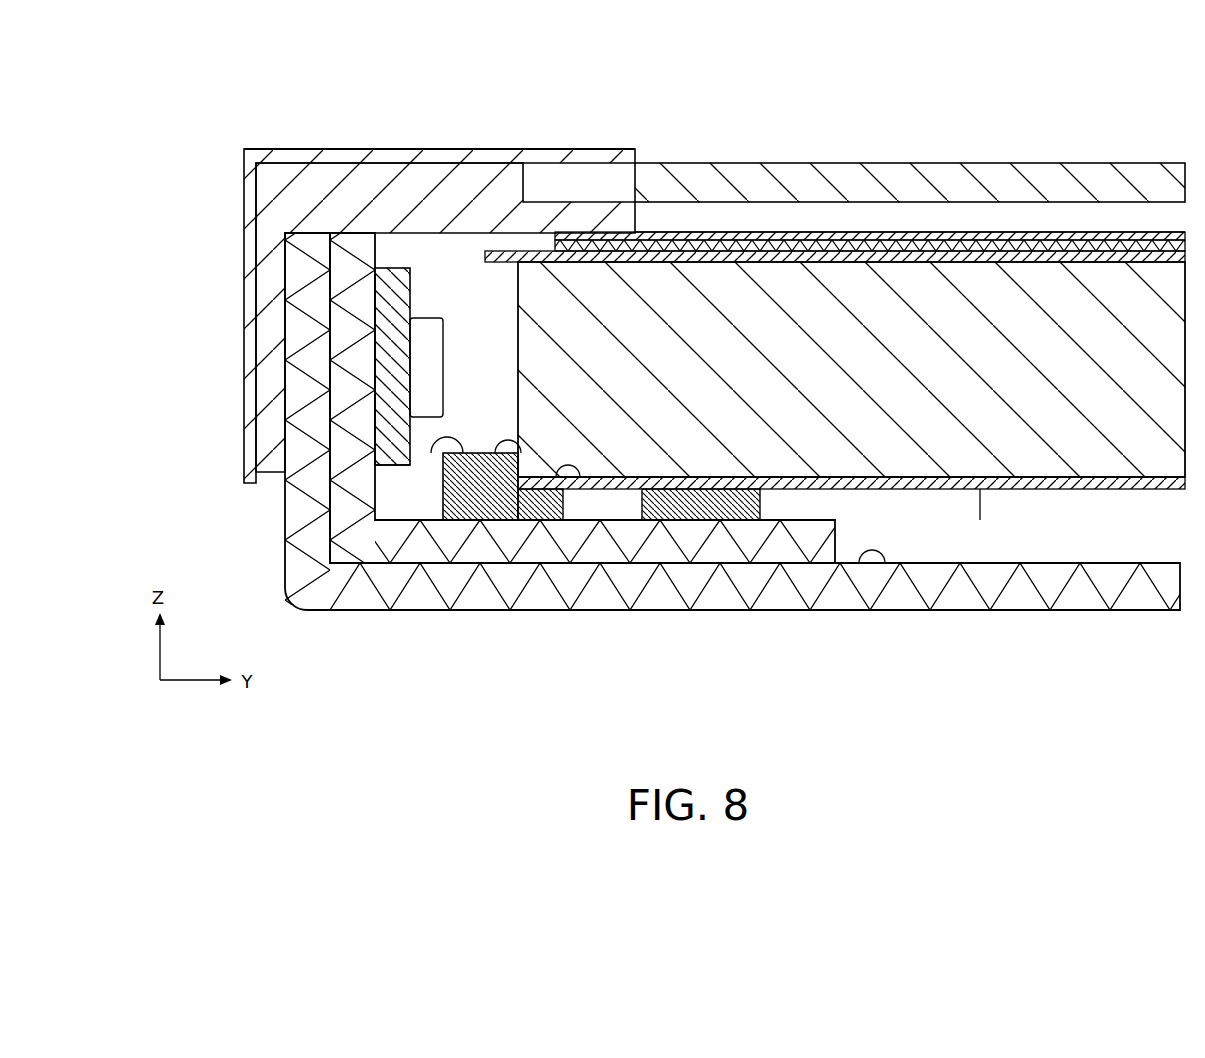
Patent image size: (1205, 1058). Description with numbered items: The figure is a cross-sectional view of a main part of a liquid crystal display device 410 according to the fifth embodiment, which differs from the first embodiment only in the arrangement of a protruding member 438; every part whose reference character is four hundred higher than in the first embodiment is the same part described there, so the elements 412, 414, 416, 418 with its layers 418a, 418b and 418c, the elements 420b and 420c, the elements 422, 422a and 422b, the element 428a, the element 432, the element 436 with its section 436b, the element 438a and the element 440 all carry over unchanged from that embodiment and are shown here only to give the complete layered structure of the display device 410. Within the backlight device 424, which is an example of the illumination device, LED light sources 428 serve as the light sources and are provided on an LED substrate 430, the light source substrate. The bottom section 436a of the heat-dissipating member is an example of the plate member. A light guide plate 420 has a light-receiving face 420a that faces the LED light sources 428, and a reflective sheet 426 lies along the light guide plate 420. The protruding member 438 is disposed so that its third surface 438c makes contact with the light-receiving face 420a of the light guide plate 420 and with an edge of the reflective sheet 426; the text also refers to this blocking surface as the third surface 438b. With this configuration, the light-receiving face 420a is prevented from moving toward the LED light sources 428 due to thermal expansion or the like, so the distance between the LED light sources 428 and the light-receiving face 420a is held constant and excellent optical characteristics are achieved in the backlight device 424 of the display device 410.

The liquid crystal display device 410 is at (775, 116).
The outer frame 412 is at (280, 158).
The frame member 414 is at (357, 180).
The cover panel 416 is at (686, 185).
The optical laminate 418 is at (835, 167).
The first optical layer 418a is at (929, 236).
The second optical layer 418b is at (995, 246).
The third optical layer 418c is at (925, 113).
The light guide plate 420 is at (821, 382).
The light-receiving face 420a is at (518, 297).
The display surface 420b is at (842, 231).
The rear surface layer of display panel 420c is at (1098, 490).
The rear housing 422 is at (670, 465).
The protrusion of rear housing 422a is at (858, 570).
The side wall of rear housing 422b is at (310, 379).
The backlight device 424 is at (778, 640).
The reflective sheet 426 is at (980, 497).
The LED light sources 428 is at (400, 320).
The wiring of light source substrate 428a is at (427, 425).
The LED substrate 430 is at (430, 345).
The light source unit 432 is at (279, 366).
The reflective sheet 436 is at (499, 448).
The bottom section 436a is at (650, 545).
The side portion of reflective sheet 436b is at (350, 398).
The protruding member 438 is at (492, 548).
The extension of light guide member 438a is at (580, 478).
The third surface 438b is at (427, 457).
The third surface 438c is at (497, 462).
The spacer 440 is at (702, 500).